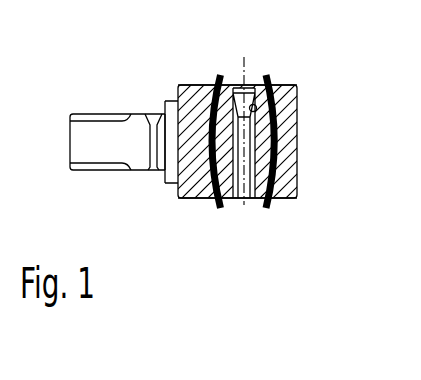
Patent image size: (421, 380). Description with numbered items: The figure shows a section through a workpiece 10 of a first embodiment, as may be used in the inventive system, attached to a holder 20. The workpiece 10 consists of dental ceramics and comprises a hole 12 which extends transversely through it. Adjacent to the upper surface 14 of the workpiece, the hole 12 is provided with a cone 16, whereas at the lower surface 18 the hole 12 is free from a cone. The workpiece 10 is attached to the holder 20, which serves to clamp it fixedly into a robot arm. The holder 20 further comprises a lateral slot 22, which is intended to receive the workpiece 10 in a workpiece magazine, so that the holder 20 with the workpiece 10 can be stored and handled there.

The workpiece 10 is at (234, 86).
The hole 12 is at (247, 198).
The upper surface 14 is at (184, 78).
The cone 16 is at (257, 108).
The lower surface 18 is at (185, 210).
The holder 20 is at (95, 138).
The lateral slot 22 is at (152, 171).